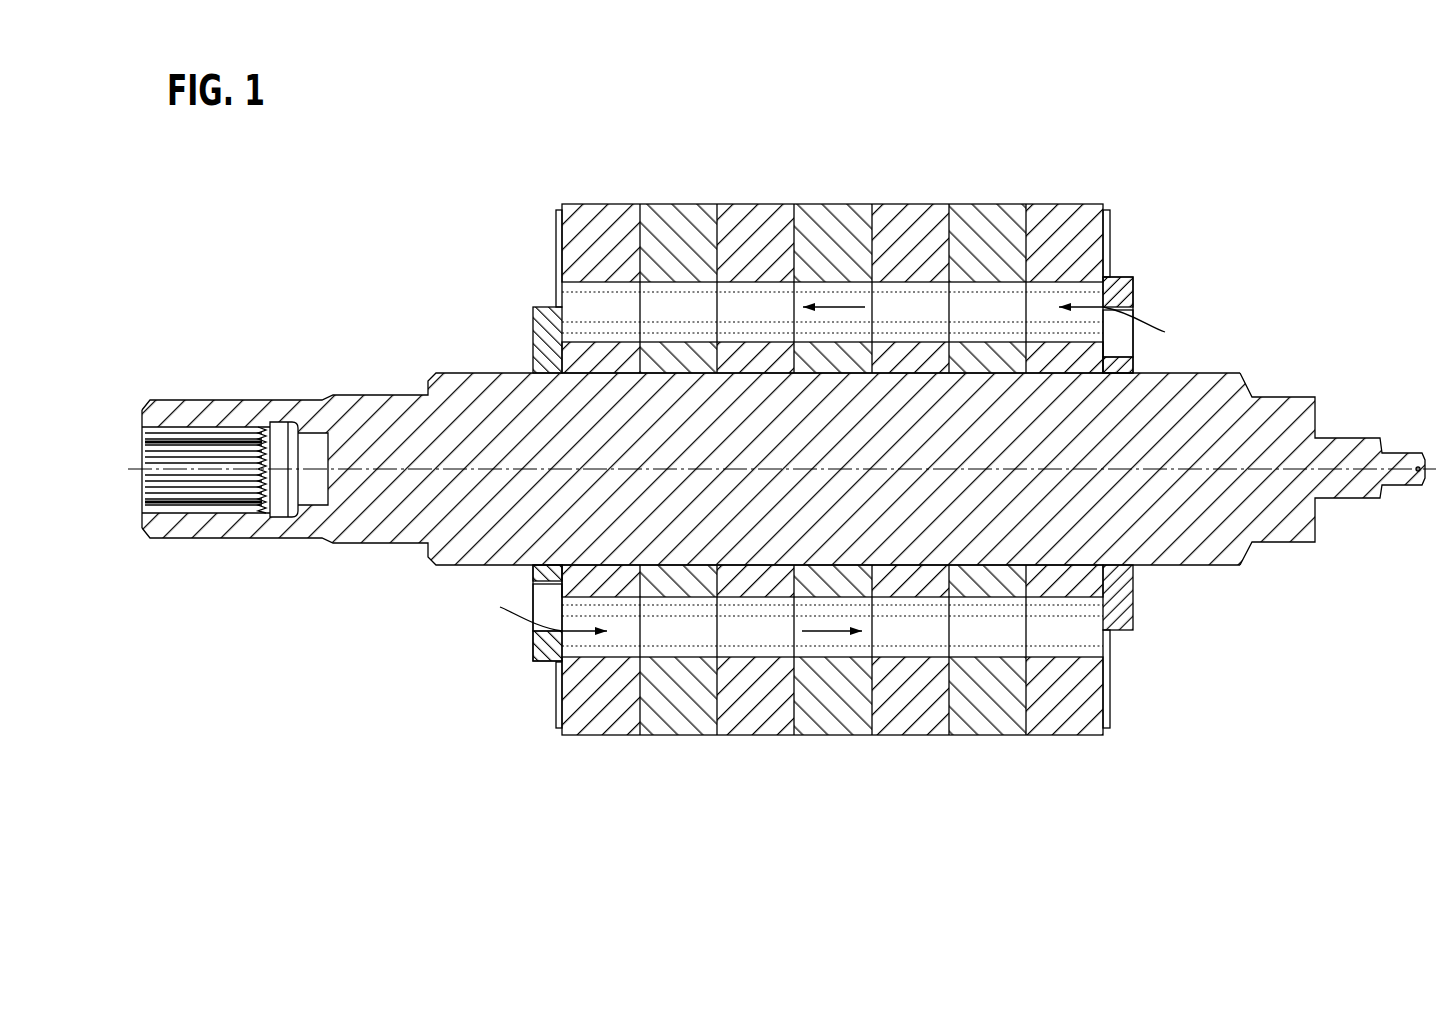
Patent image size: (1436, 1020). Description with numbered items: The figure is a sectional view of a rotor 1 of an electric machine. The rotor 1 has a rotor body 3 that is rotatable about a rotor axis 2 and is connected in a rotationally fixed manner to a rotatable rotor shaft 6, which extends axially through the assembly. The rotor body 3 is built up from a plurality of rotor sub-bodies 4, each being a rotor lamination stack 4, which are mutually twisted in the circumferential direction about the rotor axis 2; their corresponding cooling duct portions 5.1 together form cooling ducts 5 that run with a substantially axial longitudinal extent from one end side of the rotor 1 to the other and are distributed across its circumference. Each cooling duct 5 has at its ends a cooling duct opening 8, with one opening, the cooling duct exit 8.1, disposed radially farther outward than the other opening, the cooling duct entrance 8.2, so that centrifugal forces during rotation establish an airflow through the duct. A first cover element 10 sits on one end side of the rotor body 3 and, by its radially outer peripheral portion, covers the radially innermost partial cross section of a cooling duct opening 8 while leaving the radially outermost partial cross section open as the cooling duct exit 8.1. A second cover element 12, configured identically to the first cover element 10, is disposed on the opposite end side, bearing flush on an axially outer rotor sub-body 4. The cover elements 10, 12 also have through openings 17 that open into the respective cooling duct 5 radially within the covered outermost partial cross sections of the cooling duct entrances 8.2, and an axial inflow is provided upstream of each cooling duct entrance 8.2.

The rotor 1 is at (1267, 134).
The rotor axis 2 is at (391, 468).
The rotor body 3 is at (701, 192).
The rotor sub-body 4 is at (990, 220).
The cooling duct 5 is at (1043, 312).
The cooling duct portion 5.1 is at (795, 664).
The rotor shaft 6 is at (1250, 493).
The cooling duct opening 8 is at (832, 469).
The cooling duct exit 8.1 is at (623, 312).
The cooling duct entrance 8.2 is at (1141, 349).
The first cover element 10 is at (546, 343).
The second cover element 12 is at (1119, 600).
The through opening 17 is at (1124, 310).